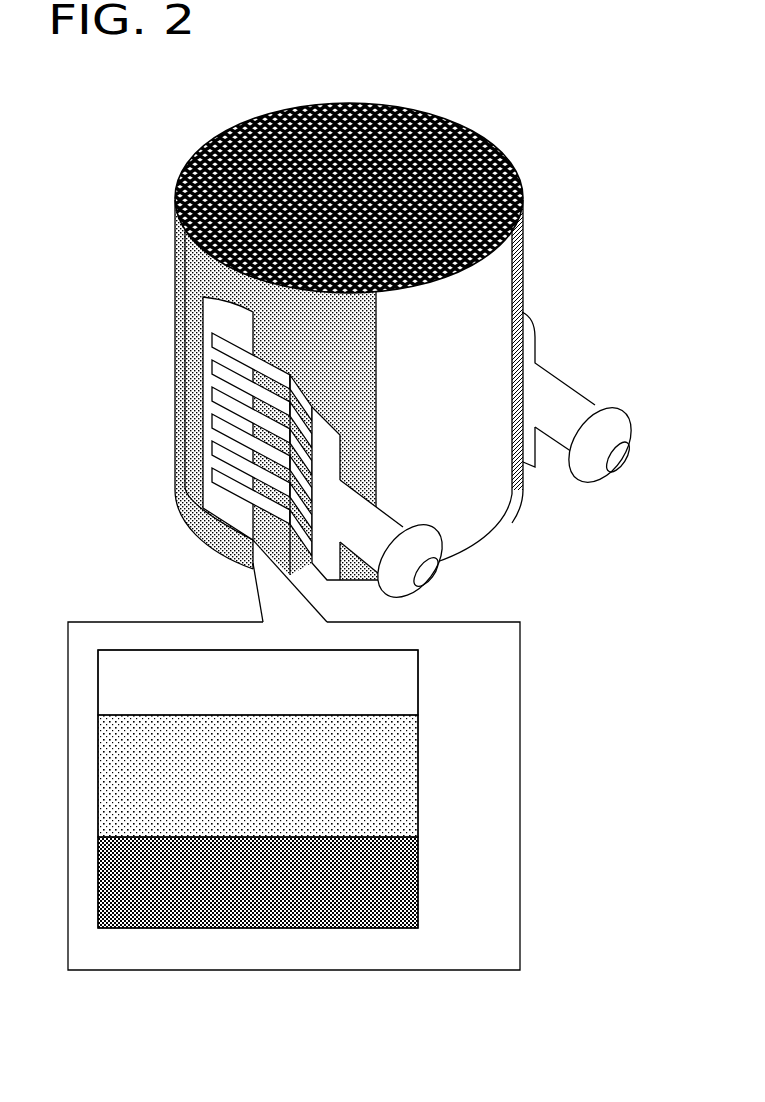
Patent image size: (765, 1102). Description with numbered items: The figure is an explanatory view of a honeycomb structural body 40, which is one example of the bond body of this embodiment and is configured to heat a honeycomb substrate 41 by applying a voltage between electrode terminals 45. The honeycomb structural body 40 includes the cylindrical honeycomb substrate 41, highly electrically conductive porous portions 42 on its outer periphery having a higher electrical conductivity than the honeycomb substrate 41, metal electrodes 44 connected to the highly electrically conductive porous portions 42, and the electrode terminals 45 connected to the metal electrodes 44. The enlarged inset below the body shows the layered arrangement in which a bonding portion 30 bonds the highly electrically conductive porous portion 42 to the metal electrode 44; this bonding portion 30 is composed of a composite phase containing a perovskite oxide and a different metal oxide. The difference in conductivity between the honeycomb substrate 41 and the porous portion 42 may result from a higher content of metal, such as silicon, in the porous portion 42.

The honeycomb structural body 40 is at (638, 117).
The honeycomb substrate 41 is at (522, 197).
The highly electrically conductive porous portion 42 is at (296, 345).
The metal electrode 44 is at (212, 317).
The electrode terminal 45 is at (340, 435).
The bonding portion 30 is at (422, 745).